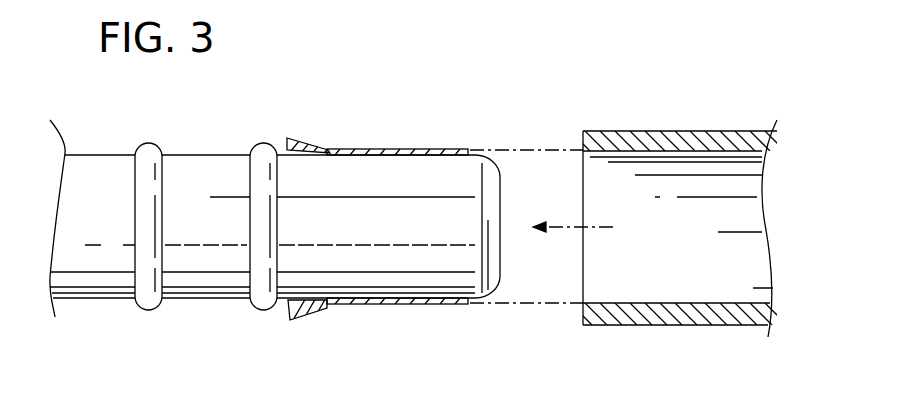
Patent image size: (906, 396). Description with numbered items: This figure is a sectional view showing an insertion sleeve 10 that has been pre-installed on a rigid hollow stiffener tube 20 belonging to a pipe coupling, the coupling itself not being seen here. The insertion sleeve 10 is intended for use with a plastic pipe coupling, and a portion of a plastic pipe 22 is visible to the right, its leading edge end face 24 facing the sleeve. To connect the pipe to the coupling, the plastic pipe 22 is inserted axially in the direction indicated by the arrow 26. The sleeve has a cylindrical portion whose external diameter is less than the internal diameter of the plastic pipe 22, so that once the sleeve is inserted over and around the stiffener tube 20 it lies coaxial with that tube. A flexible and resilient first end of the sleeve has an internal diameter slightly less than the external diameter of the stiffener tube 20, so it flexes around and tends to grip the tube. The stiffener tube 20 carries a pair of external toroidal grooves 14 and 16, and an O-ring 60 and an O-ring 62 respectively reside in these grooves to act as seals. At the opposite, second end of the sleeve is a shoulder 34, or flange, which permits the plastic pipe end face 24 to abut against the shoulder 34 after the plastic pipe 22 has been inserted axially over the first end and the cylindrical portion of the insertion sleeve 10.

The insertion sleeve 10 is at (387, 146).
The external toroidal groove 14 is at (135, 155).
The external toroidal groove 16 is at (250, 153).
The stiffener tube 20 is at (205, 282).
The plastic pipe 22 is at (670, 131).
The leading edge end face 24 is at (582, 250).
The arrow 26 is at (572, 220).
The shoulder 34 is at (333, 150).
The O-ring 60 is at (152, 143).
The O-ring 62 is at (265, 143).